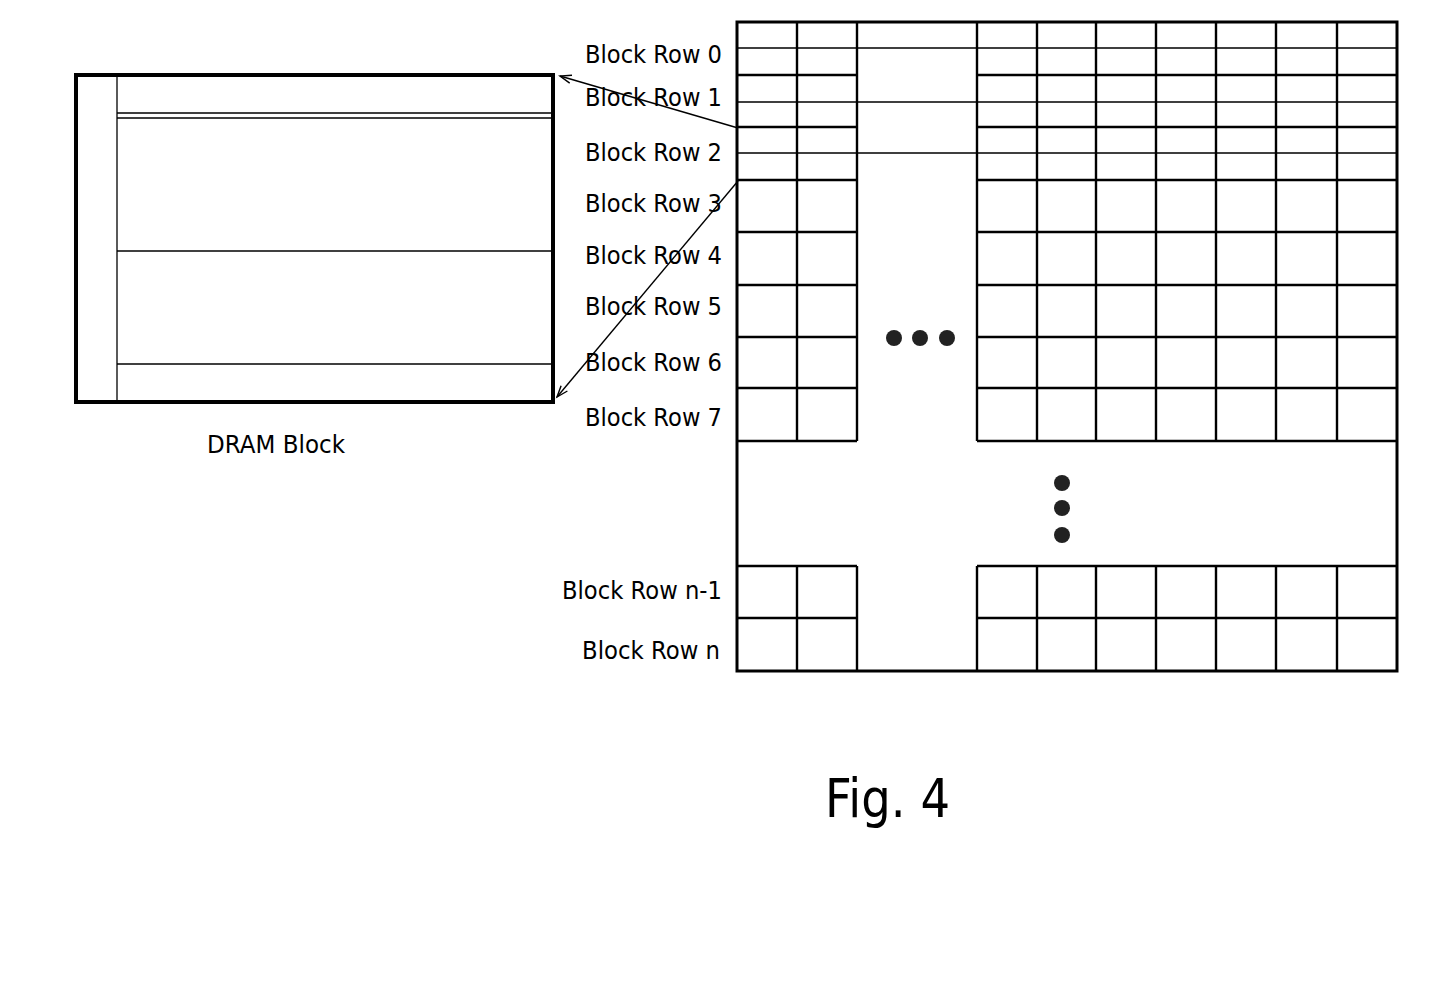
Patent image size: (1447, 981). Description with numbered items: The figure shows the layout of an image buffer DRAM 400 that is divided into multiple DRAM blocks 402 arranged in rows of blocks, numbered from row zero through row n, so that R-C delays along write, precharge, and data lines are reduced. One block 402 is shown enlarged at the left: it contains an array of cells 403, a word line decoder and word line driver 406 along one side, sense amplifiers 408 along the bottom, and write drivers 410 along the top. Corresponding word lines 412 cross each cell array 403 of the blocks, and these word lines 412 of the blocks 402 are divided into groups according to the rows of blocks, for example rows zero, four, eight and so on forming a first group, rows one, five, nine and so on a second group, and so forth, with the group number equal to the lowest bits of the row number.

The image buffer DRAM 400 is at (1412, 70).
The DRAM block 402 is at (518, 420).
The array of cells 403 is at (337, 279).
The word line decoder and word line driver 406 is at (112, 214).
The sense amplifiers 408 is at (335, 379).
The write drivers 410 is at (335, 98).
The word lines 412 is at (425, 250).